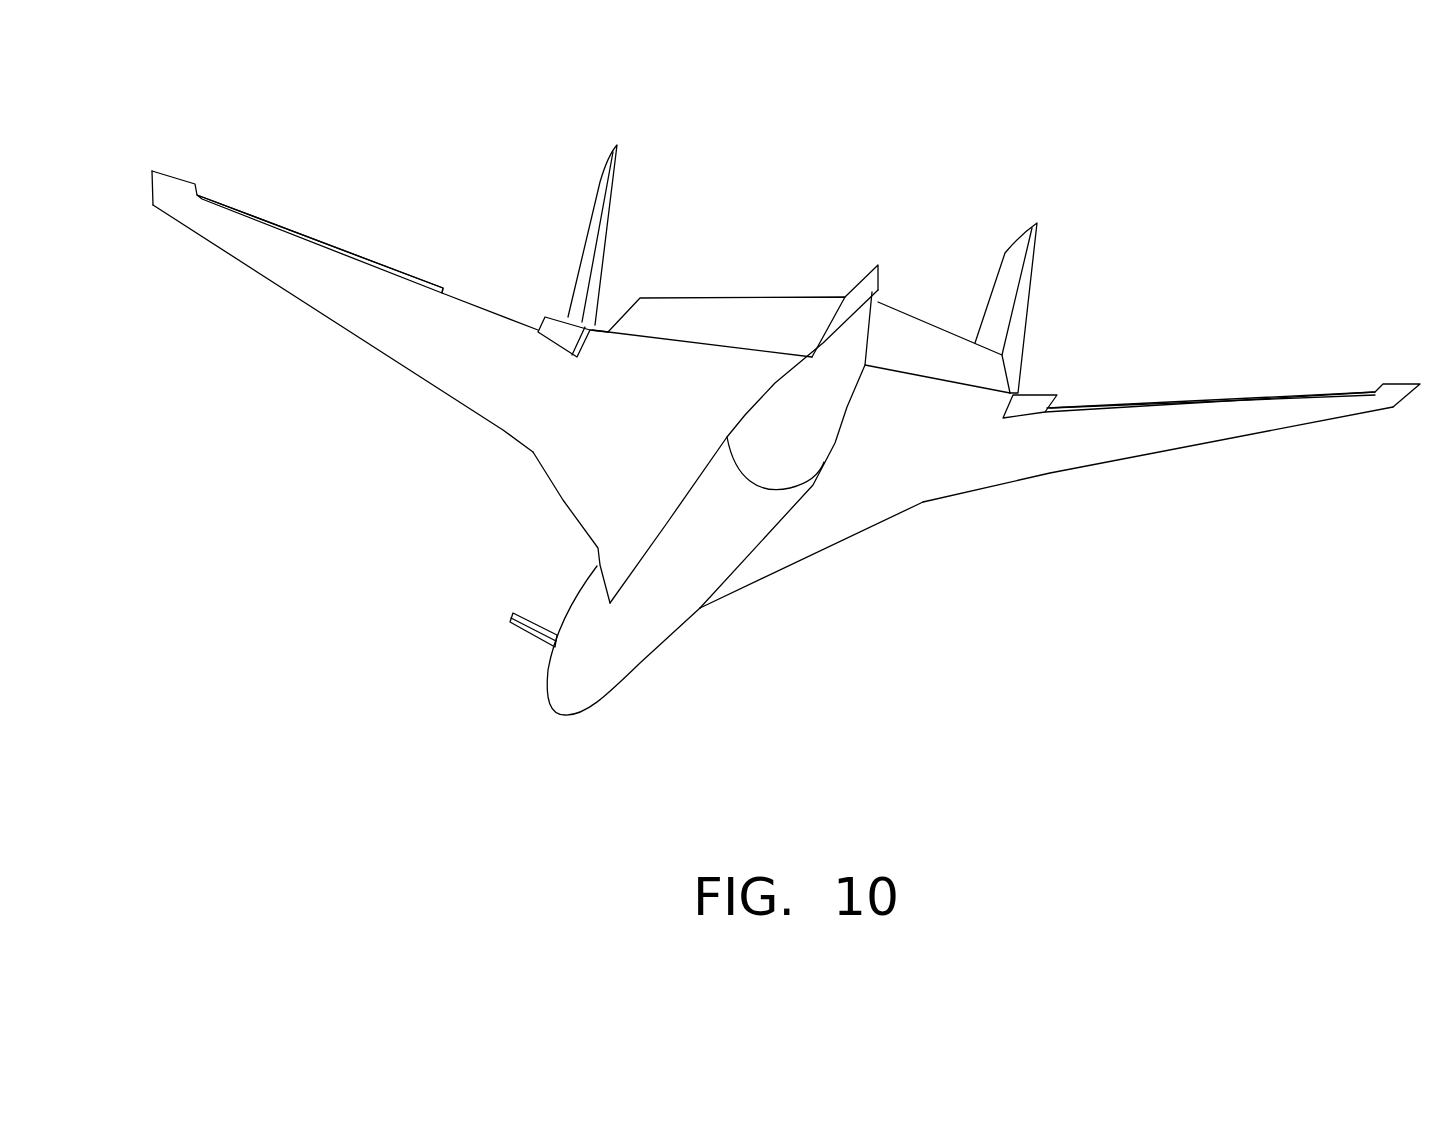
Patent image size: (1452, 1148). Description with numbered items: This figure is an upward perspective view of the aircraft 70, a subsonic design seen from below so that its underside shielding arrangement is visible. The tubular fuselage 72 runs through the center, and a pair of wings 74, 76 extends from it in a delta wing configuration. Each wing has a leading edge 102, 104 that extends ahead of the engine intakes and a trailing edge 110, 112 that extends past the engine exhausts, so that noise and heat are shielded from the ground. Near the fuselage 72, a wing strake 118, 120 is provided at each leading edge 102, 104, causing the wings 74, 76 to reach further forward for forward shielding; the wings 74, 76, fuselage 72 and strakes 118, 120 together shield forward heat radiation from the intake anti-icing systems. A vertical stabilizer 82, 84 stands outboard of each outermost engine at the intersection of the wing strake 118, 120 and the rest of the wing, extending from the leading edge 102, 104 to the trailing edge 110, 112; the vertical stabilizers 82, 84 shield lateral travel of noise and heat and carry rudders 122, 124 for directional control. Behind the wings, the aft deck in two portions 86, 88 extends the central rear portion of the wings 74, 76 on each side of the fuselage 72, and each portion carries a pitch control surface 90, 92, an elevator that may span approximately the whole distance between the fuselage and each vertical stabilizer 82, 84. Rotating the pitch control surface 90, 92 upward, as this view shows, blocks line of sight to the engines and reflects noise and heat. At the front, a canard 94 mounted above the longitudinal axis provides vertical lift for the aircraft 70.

The aircraft 70 is at (883, 135).
The fuselage 72 is at (630, 673).
The wing 74 is at (332, 320).
The wing 76 is at (1170, 452).
The vertical stabilizer 82 is at (590, 212).
The vertical stabilizer 84 is at (995, 280).
The aft deck portion 86 is at (644, 426).
The aft deck portion 88 is at (924, 449).
The pitch control surface 90 is at (737, 307).
The pitch control surface 92 is at (912, 333).
The canard 94 is at (528, 633).
The leading edge 102 is at (442, 390).
The leading edge 104 is at (1047, 475).
The trailing edge 110 is at (335, 242).
The trailing edge 112 is at (1257, 393).
The wing strake 118 is at (563, 498).
The wing strake 120 is at (840, 542).
The rudder 122 is at (610, 212).
The rudder 124 is at (1032, 290).